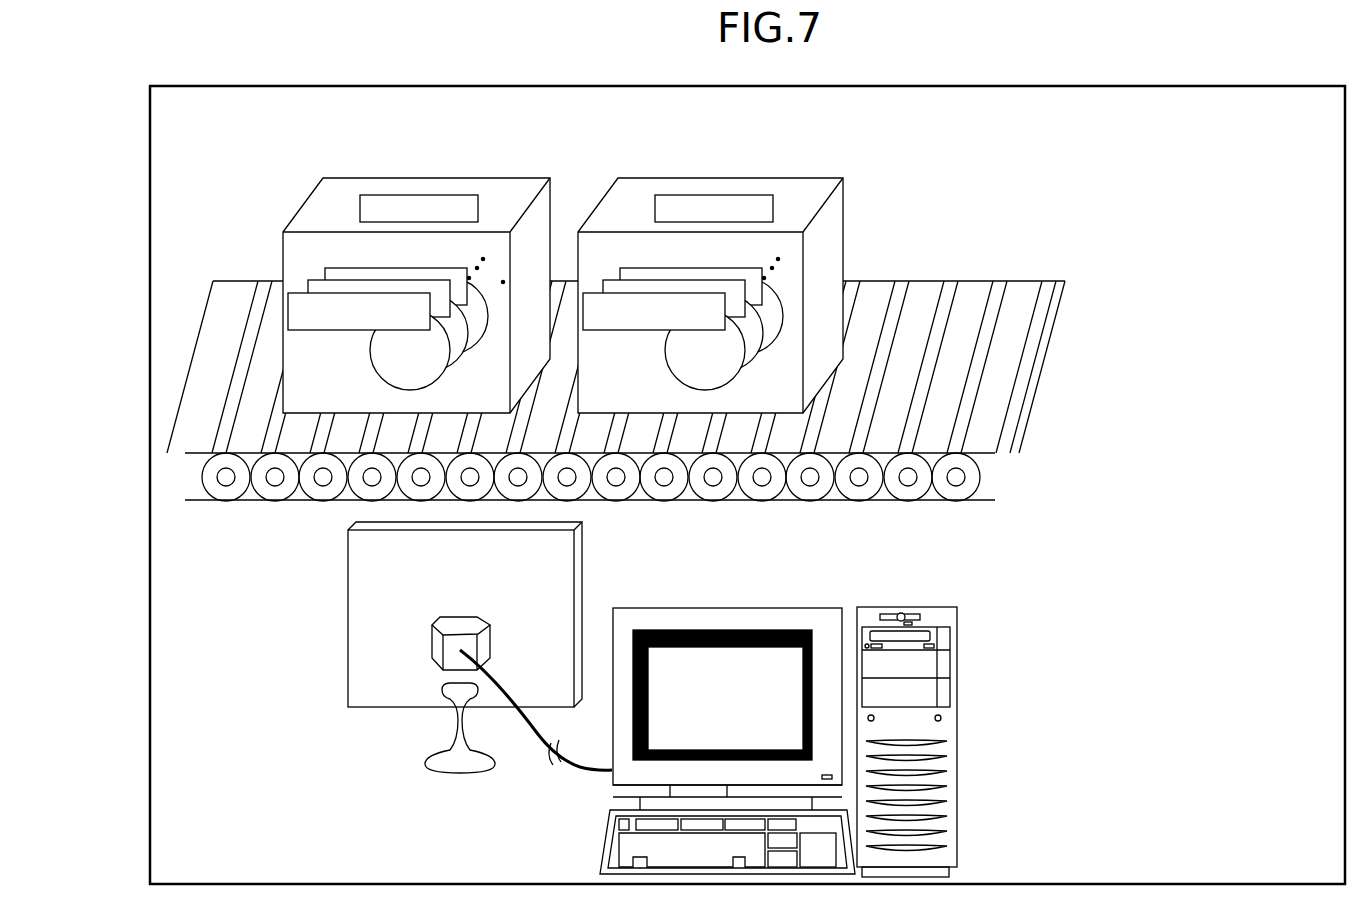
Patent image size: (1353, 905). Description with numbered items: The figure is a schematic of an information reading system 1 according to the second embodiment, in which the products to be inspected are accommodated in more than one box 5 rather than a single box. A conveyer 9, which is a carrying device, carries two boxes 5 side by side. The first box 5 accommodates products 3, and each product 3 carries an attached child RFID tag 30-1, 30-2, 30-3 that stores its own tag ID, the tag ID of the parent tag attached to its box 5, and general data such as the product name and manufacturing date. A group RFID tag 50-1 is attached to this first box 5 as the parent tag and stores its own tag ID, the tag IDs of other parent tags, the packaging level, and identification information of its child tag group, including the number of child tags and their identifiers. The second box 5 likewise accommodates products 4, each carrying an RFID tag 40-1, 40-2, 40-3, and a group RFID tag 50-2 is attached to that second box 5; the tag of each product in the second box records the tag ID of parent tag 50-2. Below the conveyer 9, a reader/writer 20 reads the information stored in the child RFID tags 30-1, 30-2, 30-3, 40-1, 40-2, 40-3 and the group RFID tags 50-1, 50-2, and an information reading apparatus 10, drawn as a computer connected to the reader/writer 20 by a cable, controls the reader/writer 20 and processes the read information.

The information reading system 1 is at (1147, 66).
The product 3 is at (396, 321).
The product 4 is at (688, 321).
The box 5 is at (500, 184).
The conveyer 9 is at (1023, 254).
The information reading apparatus 10 is at (1003, 563).
The reader/writer 20 is at (684, 565).
The RFID tag 30-1 is at (350, 293).
The RFID tag 30-2 is at (403, 280).
The RFID tag 30-3 is at (417, 268).
The RFID tag 40-1 is at (645, 293).
The RFID tag 40-2 is at (698, 280).
The RFID tag 40-3 is at (712, 268).
The RFID tag 50-1 is at (427, 195).
The RFID tag 50-2 is at (722, 195).